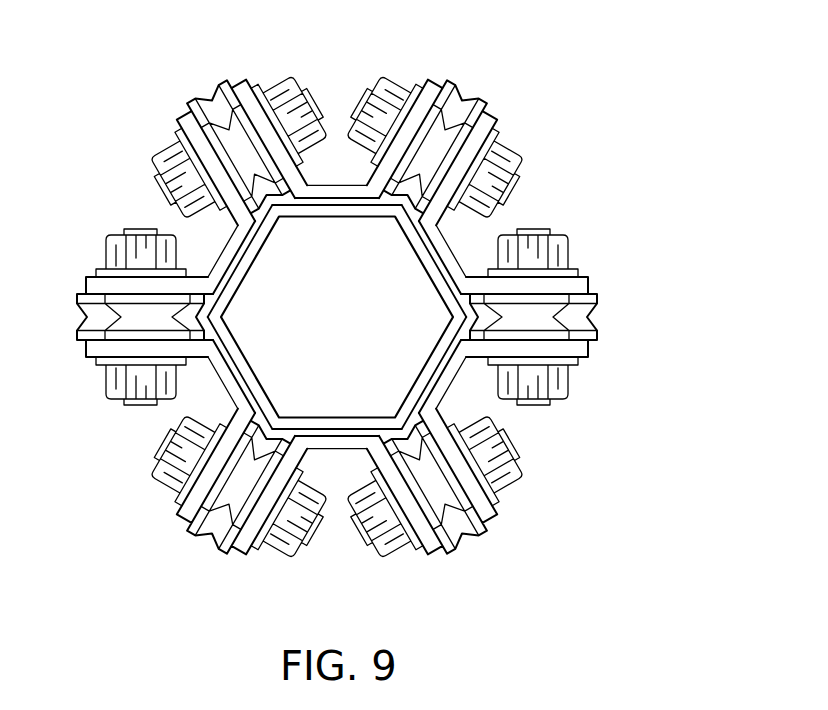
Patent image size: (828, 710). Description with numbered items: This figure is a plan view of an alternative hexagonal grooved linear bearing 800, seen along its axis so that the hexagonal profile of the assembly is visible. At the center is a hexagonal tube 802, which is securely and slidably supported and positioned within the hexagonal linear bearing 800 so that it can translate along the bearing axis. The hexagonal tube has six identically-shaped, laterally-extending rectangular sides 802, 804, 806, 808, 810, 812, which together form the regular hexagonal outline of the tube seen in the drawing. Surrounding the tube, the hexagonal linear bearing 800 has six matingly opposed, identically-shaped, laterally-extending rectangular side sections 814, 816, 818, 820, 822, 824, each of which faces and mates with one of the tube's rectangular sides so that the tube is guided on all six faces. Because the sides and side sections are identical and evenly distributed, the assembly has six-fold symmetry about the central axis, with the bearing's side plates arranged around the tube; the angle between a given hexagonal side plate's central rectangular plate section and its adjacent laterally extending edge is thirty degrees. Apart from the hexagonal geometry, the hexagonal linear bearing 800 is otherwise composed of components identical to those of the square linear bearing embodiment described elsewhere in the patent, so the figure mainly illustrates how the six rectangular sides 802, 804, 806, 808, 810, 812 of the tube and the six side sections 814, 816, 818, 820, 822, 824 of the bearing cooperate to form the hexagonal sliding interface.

The hexagonal linear bearing 800 is at (447, 292).
The hexagonal tube 802 is at (437, 388).
The rectangular side 804 is at (331, 440).
The rectangular side 806 is at (215, 375).
The rectangular side 808 is at (222, 250).
The rectangular side 810 is at (349, 208).
The rectangular side 812 is at (430, 268).
The rectangular side section 814 is at (423, 380).
The rectangular side section 816 is at (364, 455).
The rectangular side section 818 is at (253, 380).
The rectangular side section 820 is at (225, 255).
The rectangular side section 822 is at (330, 187).
The rectangular side section 824 is at (432, 263).